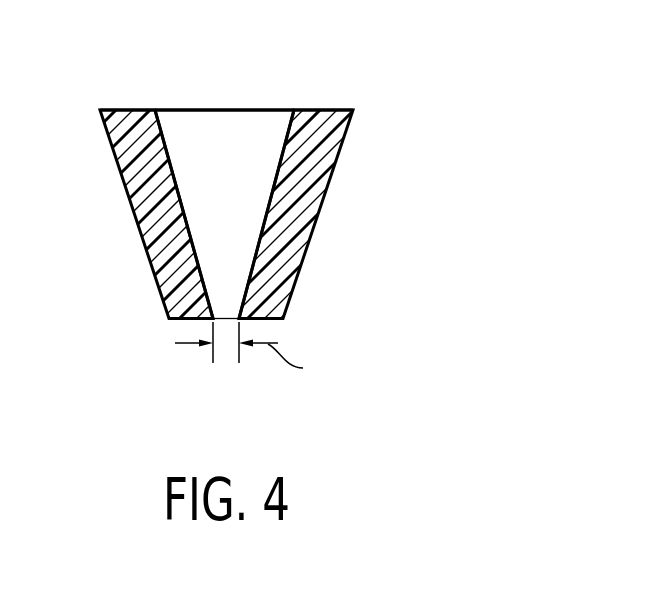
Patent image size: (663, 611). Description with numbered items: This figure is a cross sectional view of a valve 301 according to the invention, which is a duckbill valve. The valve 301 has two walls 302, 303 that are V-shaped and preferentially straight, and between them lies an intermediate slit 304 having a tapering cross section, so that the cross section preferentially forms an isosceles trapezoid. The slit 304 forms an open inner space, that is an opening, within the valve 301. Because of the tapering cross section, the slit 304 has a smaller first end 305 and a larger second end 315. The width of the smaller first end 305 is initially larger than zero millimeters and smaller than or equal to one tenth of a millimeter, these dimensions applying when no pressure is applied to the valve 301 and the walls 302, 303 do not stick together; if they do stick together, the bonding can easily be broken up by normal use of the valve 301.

The valve 301 is at (265, 217).
The wall 302 is at (138, 222).
The wall 303 is at (318, 223).
The slit 304 is at (201, 127).
The smaller first end 305 is at (227, 340).
The larger second end 315 is at (233, 93).